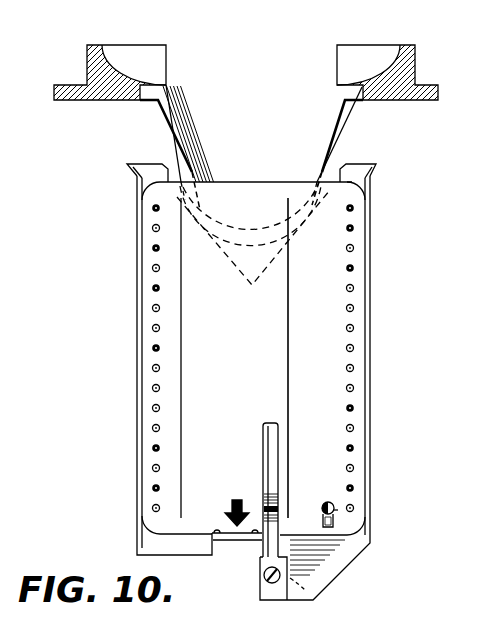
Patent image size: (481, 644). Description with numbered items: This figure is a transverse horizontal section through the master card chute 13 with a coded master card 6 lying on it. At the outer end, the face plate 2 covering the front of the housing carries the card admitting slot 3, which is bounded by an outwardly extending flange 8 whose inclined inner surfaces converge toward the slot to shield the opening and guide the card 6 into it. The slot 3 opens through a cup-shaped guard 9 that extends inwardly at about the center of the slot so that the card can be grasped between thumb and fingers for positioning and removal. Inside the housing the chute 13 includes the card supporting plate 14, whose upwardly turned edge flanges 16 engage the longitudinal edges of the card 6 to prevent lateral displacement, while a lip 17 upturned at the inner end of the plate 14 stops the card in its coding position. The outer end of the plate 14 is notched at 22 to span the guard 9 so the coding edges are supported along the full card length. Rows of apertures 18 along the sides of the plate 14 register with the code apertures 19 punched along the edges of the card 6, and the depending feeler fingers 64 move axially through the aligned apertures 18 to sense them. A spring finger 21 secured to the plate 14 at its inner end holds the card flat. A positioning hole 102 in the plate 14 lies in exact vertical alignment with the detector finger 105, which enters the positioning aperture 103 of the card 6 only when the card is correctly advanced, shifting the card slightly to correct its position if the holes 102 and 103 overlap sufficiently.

The face plate 2 is at (440, 95).
The outwardly extending flange 8 is at (407, 52).
The card admitting slot 3 is at (359, 100).
The master card chute 13 is at (371, 192).
The cup-shaped guard 9 is at (263, 242).
The notch 22 is at (242, 262).
The coded master card 6 is at (234, 358).
The feeler fingers 64 is at (152, 289).
The apertures 18 is at (152, 408).
The code apertures 19 is at (152, 487).
The spring finger 21 is at (271, 477).
The card supporting plate 14 is at (190, 541).
The lip 17 is at (237, 541).
The edge flanges 16 is at (137, 540).
The positioning aperture 103 is at (326, 506).
The finger 105 is at (338, 510).
The positioning hole 102 is at (335, 521).